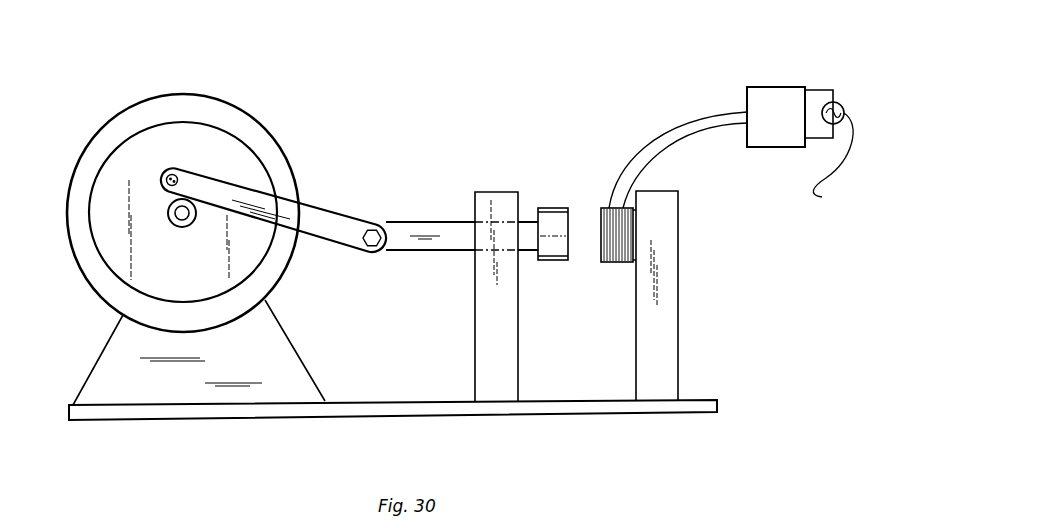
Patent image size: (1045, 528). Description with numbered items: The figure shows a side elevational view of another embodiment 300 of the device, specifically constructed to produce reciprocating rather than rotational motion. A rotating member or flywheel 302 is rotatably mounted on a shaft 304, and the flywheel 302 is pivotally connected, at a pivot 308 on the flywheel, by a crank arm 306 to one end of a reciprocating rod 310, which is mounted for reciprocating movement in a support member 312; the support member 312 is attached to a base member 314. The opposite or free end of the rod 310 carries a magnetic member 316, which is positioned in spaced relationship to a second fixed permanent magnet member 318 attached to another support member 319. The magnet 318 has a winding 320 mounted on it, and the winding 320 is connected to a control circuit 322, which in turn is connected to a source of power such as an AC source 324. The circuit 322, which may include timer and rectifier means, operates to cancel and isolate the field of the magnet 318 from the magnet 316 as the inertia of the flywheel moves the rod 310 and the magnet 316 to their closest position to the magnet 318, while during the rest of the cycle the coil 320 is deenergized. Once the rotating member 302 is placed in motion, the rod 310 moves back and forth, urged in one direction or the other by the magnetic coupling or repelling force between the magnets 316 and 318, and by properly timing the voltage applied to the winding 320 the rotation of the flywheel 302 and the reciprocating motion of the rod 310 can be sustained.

The embodiment of the device 300 is at (419, 110).
The flywheel 302 is at (292, 153).
The shaft 304 is at (182, 228).
The crank arm 306 is at (349, 256).
The crank pin 308 is at (172, 173).
The reciprocating rod 310 is at (421, 253).
The support member 312 is at (493, 366).
The base member 314 is at (644, 409).
The magnetic member 316 is at (555, 226).
The fixed permanent magnet member 318 is at (604, 246).
The support member 319 is at (667, 318).
The winding 320 is at (612, 206).
The control circuit 322 is at (782, 102).
The AC source 324 is at (838, 151).